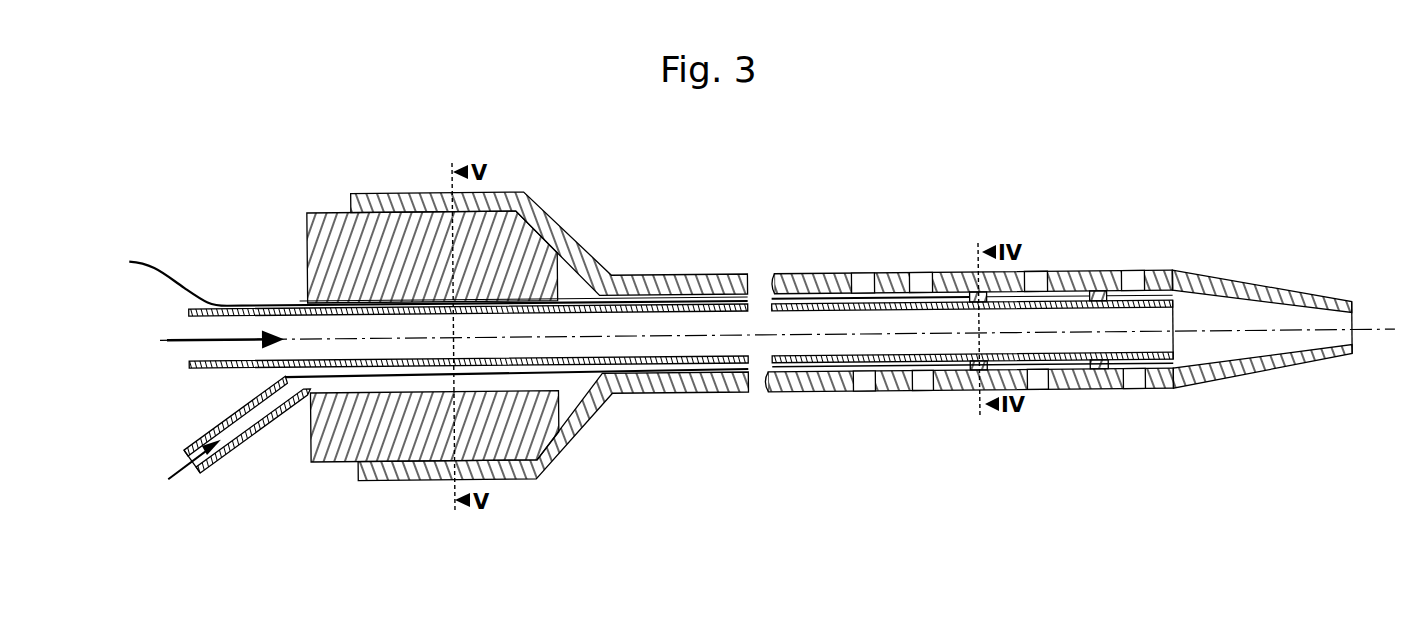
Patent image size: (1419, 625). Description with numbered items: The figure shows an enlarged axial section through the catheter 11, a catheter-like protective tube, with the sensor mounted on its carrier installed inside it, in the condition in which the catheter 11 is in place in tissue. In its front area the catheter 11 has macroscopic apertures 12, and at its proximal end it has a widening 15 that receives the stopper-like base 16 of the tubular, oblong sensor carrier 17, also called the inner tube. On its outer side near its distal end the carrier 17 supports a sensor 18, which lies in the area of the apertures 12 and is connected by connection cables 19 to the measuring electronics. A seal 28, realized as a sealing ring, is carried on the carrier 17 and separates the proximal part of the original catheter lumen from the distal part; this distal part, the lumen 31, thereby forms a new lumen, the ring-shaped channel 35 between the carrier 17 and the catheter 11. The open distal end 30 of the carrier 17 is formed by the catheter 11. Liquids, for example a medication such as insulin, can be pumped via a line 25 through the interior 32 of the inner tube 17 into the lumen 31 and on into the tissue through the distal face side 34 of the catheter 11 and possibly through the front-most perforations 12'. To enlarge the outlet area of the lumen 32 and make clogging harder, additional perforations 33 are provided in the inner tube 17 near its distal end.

The catheter 11 is at (822, 275).
The macroscopic apertures 12 is at (962, 328).
The front-most perforations 12' is at (1137, 327).
The widening 15 is at (545, 223).
The stopper-like base 16 is at (333, 267).
The sensor carrier 17 is at (708, 362).
The sensor 18 is at (972, 275).
The connection cables 19 is at (147, 260).
The line 25 is at (247, 435).
The seal 28 is at (1097, 288).
The distal end of the carrier 30 is at (1227, 377).
The lumen 31 is at (1172, 292).
The interior of the carrier 32 is at (788, 345).
The additional perforations 33 is at (1135, 362).
The distal face side 34 is at (1354, 320).
The ring-shaped channel 35 is at (828, 373).